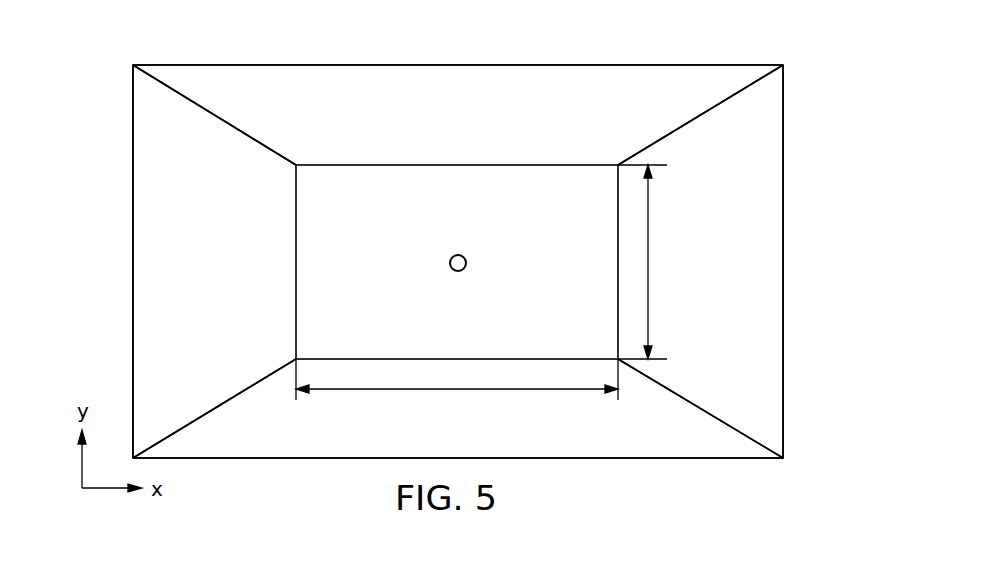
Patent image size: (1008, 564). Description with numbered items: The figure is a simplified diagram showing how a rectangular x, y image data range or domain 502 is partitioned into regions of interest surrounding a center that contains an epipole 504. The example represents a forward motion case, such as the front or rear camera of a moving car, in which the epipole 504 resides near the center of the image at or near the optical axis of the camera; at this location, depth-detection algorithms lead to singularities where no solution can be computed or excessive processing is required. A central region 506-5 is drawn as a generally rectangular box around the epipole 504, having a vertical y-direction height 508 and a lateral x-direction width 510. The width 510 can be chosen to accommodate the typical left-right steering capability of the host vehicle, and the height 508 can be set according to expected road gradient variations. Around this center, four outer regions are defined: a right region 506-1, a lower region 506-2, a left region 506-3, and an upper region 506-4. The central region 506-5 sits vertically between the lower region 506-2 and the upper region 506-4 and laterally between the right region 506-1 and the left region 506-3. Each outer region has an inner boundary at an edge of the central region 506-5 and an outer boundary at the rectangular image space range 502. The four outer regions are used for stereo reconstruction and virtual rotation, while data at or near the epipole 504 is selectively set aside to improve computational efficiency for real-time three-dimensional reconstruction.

The image data range 502 is at (377, 65).
The epipole 504 is at (447, 263).
The right region 506-1 is at (777, 255).
The lower region 506-2 is at (622, 450).
The left region 506-3 is at (138, 262).
The upper region 506-4 is at (538, 72).
The central region 506-5 is at (305, 262).
The height 508 is at (648, 262).
The width 510 is at (453, 390).